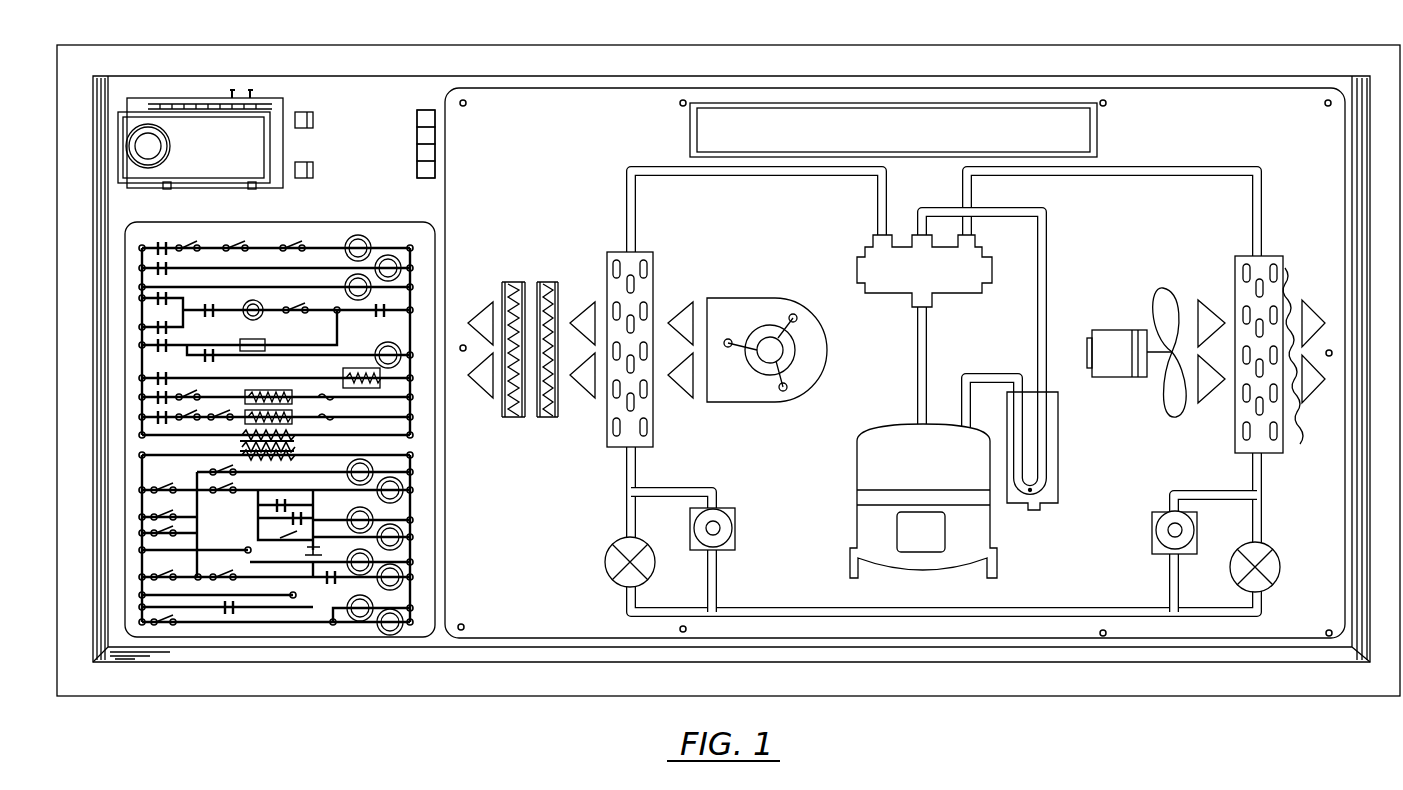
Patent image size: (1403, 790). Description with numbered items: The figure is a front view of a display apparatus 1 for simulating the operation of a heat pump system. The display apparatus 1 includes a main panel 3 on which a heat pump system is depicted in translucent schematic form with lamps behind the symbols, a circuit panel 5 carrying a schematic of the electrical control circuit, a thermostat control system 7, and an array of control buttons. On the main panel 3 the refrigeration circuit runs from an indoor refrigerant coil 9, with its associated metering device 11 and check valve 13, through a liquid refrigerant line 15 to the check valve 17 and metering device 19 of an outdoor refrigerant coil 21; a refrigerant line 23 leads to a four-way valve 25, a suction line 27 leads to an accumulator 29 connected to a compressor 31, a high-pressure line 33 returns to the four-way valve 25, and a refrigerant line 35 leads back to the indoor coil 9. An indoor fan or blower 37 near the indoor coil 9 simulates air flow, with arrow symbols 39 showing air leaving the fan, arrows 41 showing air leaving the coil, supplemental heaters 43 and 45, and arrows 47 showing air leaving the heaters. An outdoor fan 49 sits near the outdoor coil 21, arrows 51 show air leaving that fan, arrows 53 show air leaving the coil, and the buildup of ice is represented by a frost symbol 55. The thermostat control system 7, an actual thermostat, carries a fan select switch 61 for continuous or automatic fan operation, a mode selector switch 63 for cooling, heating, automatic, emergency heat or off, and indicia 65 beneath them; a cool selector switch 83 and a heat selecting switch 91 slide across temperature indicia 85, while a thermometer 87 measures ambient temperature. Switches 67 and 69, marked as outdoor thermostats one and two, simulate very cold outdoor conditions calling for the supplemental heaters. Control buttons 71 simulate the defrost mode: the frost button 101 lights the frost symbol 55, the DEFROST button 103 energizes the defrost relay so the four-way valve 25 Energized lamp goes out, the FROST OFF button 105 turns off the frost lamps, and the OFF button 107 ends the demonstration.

The display apparatus 1 is at (969, 24).
The main panel 3 is at (895, 363).
The circuit panel 5 is at (352, 638).
The thermostat control system 7 is at (206, 128).
The indoor refrigerant coil 9 is at (660, 442).
The metering device 11 is at (612, 580).
The check valve 13 is at (722, 506).
The liquid refrigerant line 15 is at (885, 618).
The check valve 17 is at (1158, 506).
The metering device 19 is at (1270, 548).
The outdoor refrigerant coil 21 is at (1272, 258).
The refrigerant line 23 is at (1265, 183).
The four-way valve 25 is at (984, 252).
The suction line 27 is at (1050, 290).
The accumulator 29 is at (1060, 472).
The compressor 31 is at (850, 528).
The high-pressure line 33 is at (915, 392).
The refrigerant line 35 is at (627, 178).
The indoor fan or blower 37 is at (778, 300).
The arrow symbols 39 is at (683, 398).
The arrows 41 is at (585, 398).
The supplemental heater 43 is at (560, 296).
The supplemental heater 45 is at (500, 292).
The arrows 47 is at (485, 398).
The outdoor fan 49 is at (1105, 330).
The arrows 51 is at (1213, 403).
The arrows 53 is at (1312, 385).
The frost symbol 55 is at (1292, 430).
The fan select switch 61 is at (170, 182).
The mode selector switch 63 is at (253, 182).
The indicia 65 is at (298, 196).
The switch ODT 1 67 is at (310, 110).
The switch ODT 2 69 is at (308, 160).
The control buttons 71 is at (426, 120).
The cool selector switch 83 is at (252, 90).
The temperature indicia 85 is at (189, 100).
The thermometer 87 is at (140, 152).
The heat selecting switch 91 is at (236, 90).
The frost button 101 is at (435, 118).
The DEFROST button 103 is at (435, 135).
The FROST OFF button 105 is at (435, 152).
The OFF button 107 is at (435, 170).